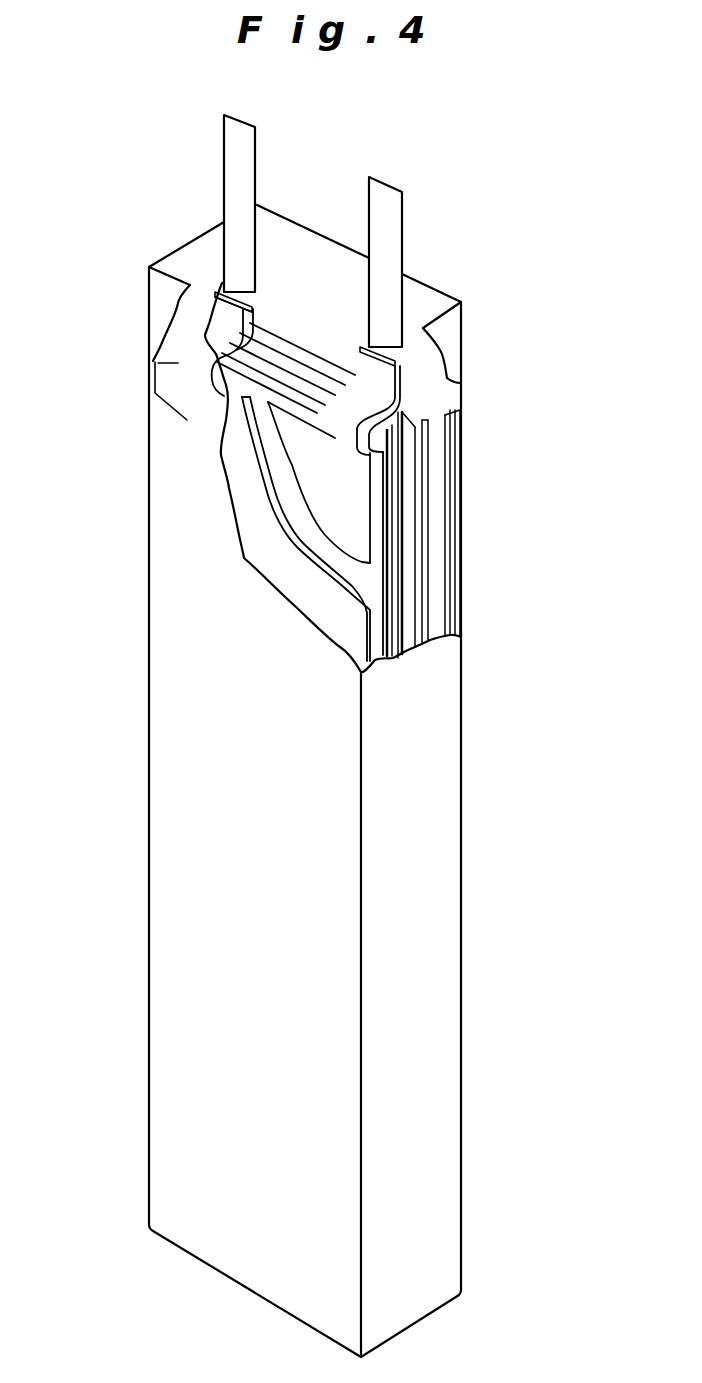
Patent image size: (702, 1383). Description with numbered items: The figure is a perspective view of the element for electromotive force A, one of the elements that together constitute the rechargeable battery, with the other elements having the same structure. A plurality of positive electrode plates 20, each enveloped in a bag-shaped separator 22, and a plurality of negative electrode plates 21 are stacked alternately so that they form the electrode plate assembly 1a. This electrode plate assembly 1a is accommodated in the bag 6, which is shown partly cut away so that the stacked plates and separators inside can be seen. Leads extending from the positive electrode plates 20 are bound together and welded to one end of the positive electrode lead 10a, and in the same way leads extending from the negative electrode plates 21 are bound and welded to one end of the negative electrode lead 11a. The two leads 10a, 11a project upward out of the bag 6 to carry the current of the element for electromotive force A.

The bag 6 is at (148, 612).
The electrode plate assembly 1a is at (188, 388).
The negative electrode lead 11a is at (228, 140).
The positive electrode lead 10a is at (393, 210).
The positive electrode plates 20 is at (290, 440).
The bag-shaped separators 22 is at (288, 471).
The negative electrode plates 21 is at (264, 528).
The element for electromotive force A is at (482, 703).